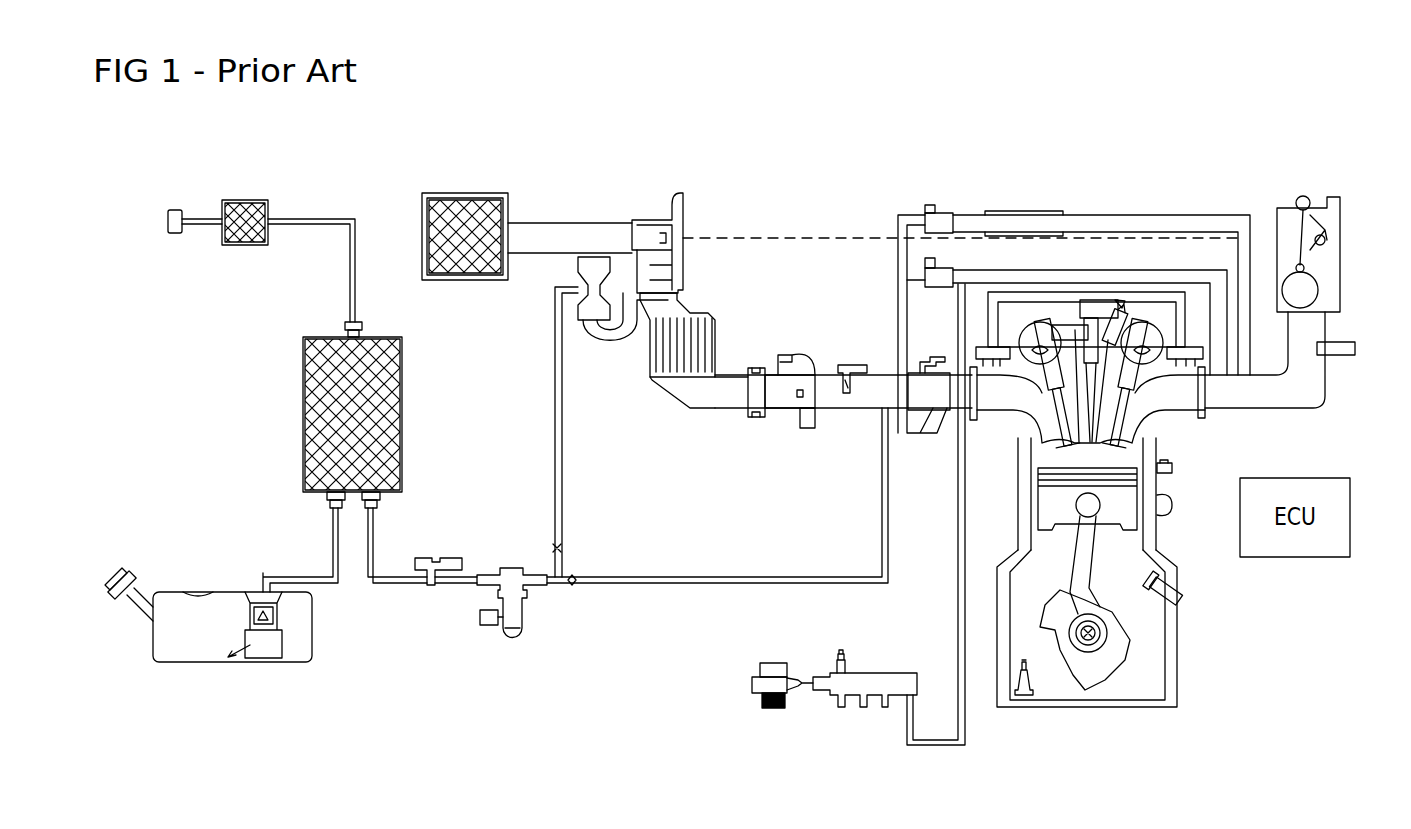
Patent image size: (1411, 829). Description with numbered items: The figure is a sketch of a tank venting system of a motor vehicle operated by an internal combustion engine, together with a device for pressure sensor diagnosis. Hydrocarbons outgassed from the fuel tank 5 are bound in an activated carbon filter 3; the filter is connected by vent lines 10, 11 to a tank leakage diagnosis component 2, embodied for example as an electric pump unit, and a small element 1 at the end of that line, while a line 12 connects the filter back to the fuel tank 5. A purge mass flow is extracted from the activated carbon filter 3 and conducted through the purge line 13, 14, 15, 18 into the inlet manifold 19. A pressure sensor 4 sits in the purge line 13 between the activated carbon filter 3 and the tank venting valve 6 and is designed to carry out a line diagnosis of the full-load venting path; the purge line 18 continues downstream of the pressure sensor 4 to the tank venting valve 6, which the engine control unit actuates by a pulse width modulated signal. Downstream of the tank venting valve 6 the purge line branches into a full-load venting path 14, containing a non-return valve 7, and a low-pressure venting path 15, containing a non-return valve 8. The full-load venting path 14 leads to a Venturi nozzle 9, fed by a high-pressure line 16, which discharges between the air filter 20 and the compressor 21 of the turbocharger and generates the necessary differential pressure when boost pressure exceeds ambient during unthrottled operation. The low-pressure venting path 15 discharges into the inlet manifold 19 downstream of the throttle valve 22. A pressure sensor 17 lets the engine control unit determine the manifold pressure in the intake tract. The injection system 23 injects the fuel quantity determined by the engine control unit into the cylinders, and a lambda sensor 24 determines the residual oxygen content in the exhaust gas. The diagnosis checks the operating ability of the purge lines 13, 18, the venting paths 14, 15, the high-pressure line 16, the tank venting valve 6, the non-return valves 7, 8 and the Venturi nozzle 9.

The pressure sensor 1 is at (172, 237).
The tank leakage diagnosis component 2 is at (245, 247).
The activated carbon filter 3 is at (322, 415).
The pressure sensor 4 is at (438, 557).
The fuel tank 5 is at (312, 625).
The tank venting valve 6 is at (518, 567).
The non-return valve 7 is at (562, 548).
The non-return valve 8 is at (572, 586).
The Venturi nozzle 9 is at (583, 321).
The vent line 10 is at (202, 218).
The vent line 11 is at (312, 218).
The tank connecting line 12 is at (333, 527).
The purge line 13 is at (398, 576).
The full-load venting path 14 is at (555, 380).
The low-pressure venting path 15 is at (762, 576).
The high-pressure line 16 is at (611, 346).
The pressure sensor 17 is at (848, 364).
The purge line 18 is at (453, 586).
The inlet manifold 19 is at (571, 222).
The air filter 20 is at (466, 192).
The compressor 21 is at (687, 208).
The throttle valve 22 is at (801, 357).
The injection system 23 is at (1100, 292).
The lambda sensor 24 is at (1345, 357).